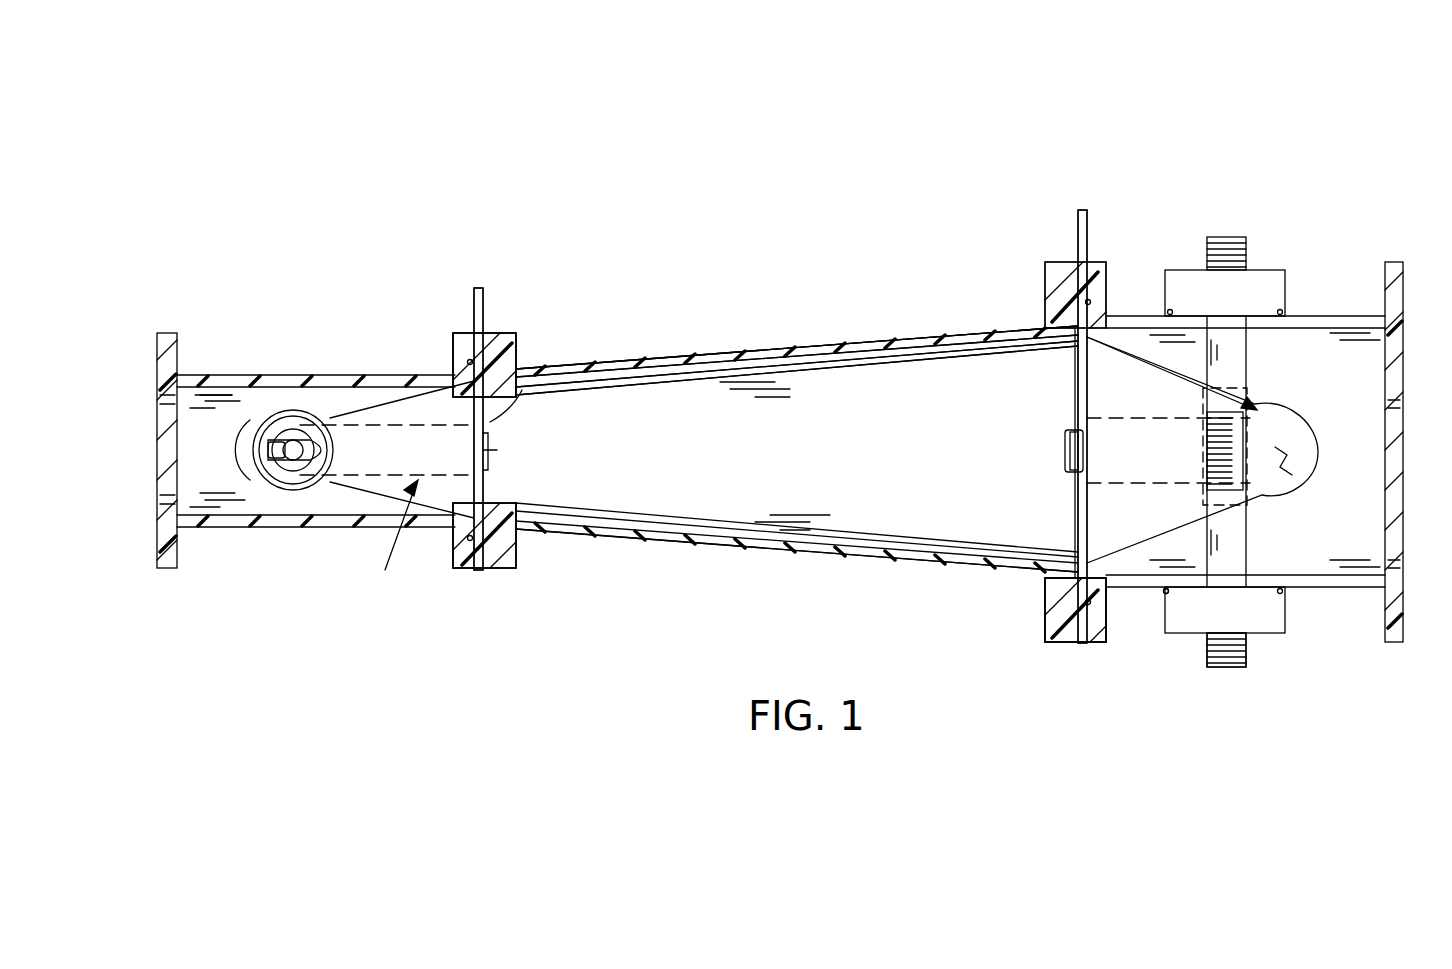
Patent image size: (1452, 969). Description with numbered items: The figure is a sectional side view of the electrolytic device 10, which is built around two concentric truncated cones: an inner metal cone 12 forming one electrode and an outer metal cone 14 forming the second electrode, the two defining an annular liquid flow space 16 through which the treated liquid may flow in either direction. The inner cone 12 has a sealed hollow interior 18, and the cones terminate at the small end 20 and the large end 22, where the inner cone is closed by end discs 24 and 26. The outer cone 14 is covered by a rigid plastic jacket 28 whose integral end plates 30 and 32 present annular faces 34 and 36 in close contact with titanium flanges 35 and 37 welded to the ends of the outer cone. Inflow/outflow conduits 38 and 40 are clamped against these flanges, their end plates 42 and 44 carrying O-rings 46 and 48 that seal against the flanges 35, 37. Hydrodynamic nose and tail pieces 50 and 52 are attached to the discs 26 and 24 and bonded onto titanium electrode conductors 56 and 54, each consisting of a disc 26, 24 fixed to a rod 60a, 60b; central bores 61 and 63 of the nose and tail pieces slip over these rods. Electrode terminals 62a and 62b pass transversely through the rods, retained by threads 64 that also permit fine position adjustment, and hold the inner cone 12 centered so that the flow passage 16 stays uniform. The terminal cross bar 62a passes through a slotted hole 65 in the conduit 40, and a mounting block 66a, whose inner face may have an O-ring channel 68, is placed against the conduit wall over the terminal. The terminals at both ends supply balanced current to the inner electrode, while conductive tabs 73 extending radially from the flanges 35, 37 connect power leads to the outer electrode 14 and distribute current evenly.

The electrolytic device 10 is at (1018, 125).
The inner metal cone 12 is at (662, 523).
The outer metal cone 14 is at (653, 352).
The annular liquid flow space 16 is at (755, 367).
The hollow interior 18 is at (970, 447).
The end of the cones 20 is at (450, 548).
The end of the cones 22 is at (1108, 588).
The closing end disc 24 is at (490, 422).
The closing end disc 26 is at (1083, 388).
The jacket or housing 28 is at (890, 334).
The annular end plate 30 is at (498, 333).
The annular end plate 32 is at (1058, 262).
The annular face 34 is at (467, 357).
The annular titanium disc or flange 35 is at (478, 572).
The annular face 36 is at (1092, 277).
The annular titanium disc or flange 37 is at (1082, 643).
The inflow/outflow conduit 38 is at (235, 352).
The inflow/outflow conduit 40 is at (1370, 235).
The end plate of the conduit 42 is at (460, 353).
The end plate of the conduit 44 is at (1092, 330).
The O-ring 46 is at (512, 572).
The O-ring 48 is at (1073, 598).
The nose piece 50 is at (1273, 620).
The tail piece 52 is at (365, 458).
The titanium electrode conductor 54 is at (362, 495).
The titanium electrode conductor 56 is at (1290, 390).
The conductive rod 60a is at (1050, 597).
The conductive rod 60b is at (292, 467).
The central bore 61 is at (1290, 472).
The electrode terminal 62a is at (1213, 655).
The electrode terminal 62b is at (290, 465).
The central bore 63 is at (328, 365).
The threads 64 is at (1305, 448).
The slotted hole 65 is at (1230, 325).
The mounting block 66a is at (1265, 270).
The annular O-ring channel 68 is at (1163, 587).
The conductive tab 73 is at (479, 287).